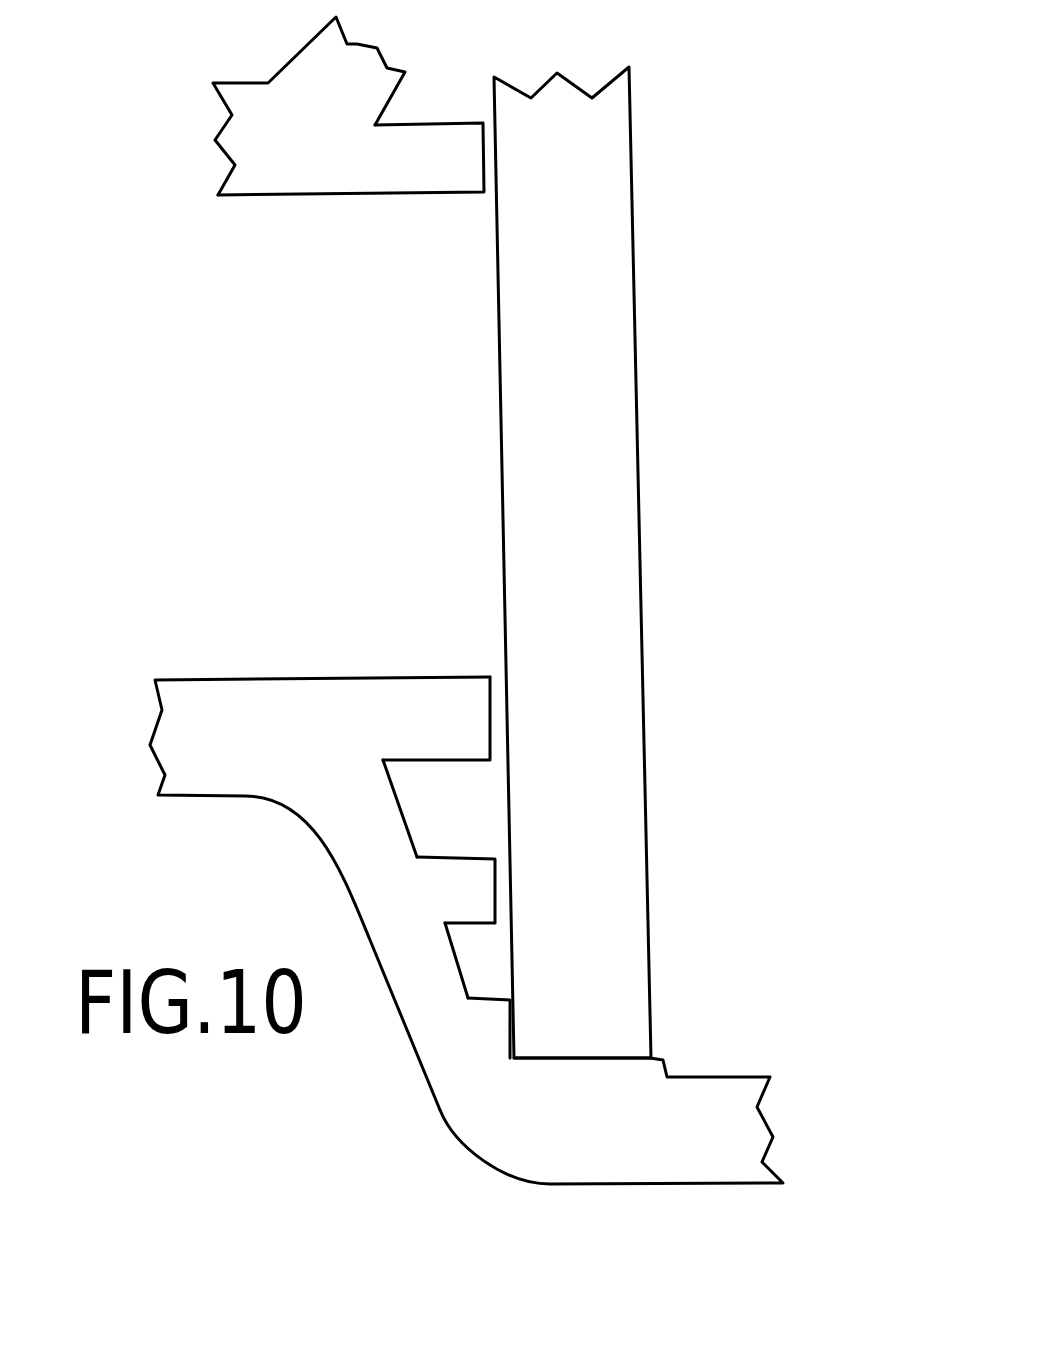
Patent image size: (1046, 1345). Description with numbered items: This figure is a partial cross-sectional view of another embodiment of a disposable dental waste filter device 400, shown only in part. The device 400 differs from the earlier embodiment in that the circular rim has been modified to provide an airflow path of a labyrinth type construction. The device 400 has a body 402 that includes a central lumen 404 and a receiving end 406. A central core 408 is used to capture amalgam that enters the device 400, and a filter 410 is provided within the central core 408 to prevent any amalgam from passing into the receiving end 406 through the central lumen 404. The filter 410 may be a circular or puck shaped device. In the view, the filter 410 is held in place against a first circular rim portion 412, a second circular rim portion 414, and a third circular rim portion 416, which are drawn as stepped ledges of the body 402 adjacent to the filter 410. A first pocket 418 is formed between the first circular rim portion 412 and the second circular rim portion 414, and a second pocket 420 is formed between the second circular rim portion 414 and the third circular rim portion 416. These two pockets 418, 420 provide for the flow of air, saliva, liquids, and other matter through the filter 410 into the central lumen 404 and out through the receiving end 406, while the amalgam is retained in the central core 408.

The disposable dental waste filter device 400 is at (726, 135).
The body 402 is at (598, 1187).
The central lumen 404 is at (193, 503).
The receiving end 406 is at (105, 795).
The central core 408 is at (682, 562).
The filter 410 is at (617, 778).
The first circular rim portion 412 is at (421, 163).
The second circular rim portion 414 is at (452, 882).
The third circular rim portion 416 is at (498, 1002).
The first pocket 418 is at (420, 802).
The second pocket 420 is at (470, 955).